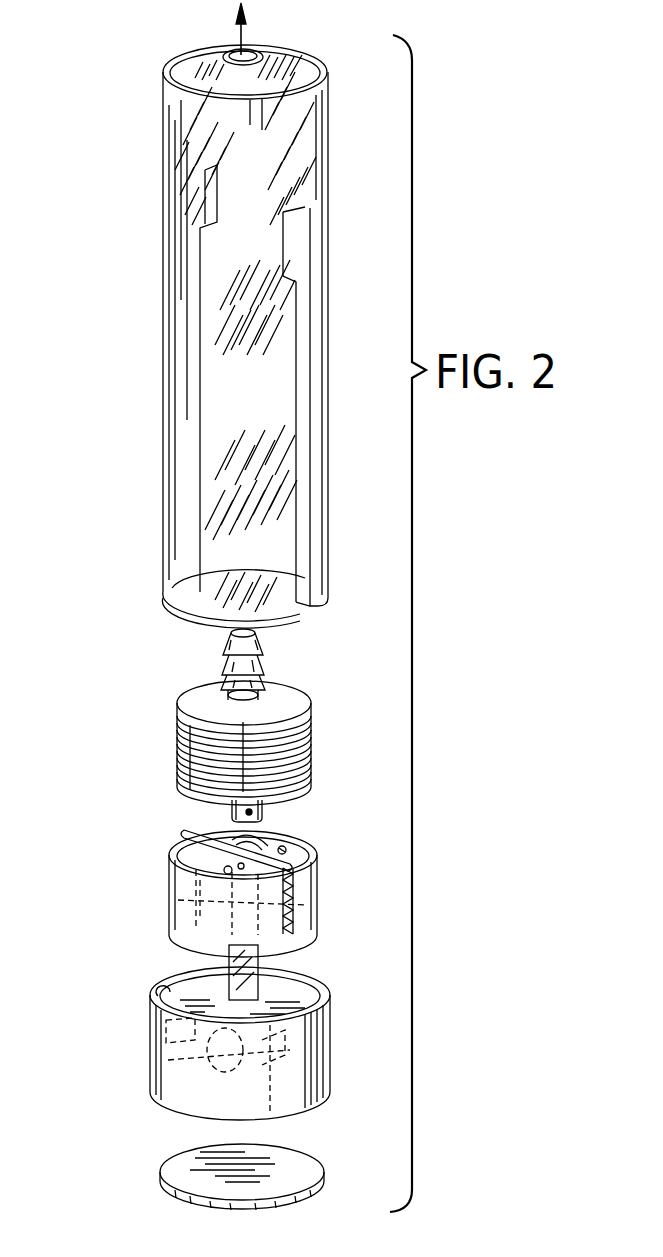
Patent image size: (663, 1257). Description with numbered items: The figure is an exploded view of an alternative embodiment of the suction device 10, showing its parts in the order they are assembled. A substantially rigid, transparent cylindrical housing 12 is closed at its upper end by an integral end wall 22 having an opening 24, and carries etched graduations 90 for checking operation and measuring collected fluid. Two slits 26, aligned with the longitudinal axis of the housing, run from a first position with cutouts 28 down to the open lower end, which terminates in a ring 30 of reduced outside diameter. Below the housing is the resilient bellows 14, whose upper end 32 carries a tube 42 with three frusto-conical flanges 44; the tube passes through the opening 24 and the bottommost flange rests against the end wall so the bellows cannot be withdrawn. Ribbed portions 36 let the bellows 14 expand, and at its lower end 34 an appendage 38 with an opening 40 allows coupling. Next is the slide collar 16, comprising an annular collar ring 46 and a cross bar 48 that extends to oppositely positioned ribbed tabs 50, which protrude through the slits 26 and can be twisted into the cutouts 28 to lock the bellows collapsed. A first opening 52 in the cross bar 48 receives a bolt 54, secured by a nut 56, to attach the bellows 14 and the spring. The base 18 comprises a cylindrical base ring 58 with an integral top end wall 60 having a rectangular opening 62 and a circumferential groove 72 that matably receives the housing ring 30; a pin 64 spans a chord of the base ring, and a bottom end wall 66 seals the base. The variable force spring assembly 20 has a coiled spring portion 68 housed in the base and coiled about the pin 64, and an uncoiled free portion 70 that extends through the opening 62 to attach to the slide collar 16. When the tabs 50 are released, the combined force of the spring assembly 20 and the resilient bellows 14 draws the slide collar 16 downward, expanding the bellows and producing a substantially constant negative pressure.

The suction device 10 is at (122, 35).
The cylindrical housing 12 is at (78, 612).
The resilient bellows 14 is at (78, 678).
The slide collar 16 is at (78, 822).
The base 18 is at (78, 985).
The variable force spring assembly 20 is at (265, 958).
The end wall 22 is at (196, 73).
The opening 24 is at (228, 50).
The slits 26 is at (197, 371).
The cutouts 28 is at (206, 186).
The ring 30 is at (197, 612).
The upper end 32 is at (198, 701).
The lower end 34 is at (300, 792).
The ribbed portions 36 is at (210, 775).
The appendage 38 is at (232, 808).
The opening 40 is at (265, 812).
The tube 42 is at (261, 648).
The flanges 44 is at (263, 664).
The collar ring 46 is at (195, 920).
The cross bar 48 is at (178, 852).
The tabs 50 is at (293, 896).
The first opening 52 is at (207, 826).
The bolt 54 is at (305, 848).
The nut 56 is at (180, 878).
The base ring 58 is at (300, 1055).
The top end wall 60 is at (310, 990).
The rectangular opening 62 is at (275, 972).
The pin 64 is at (275, 1122).
The bottom end wall 66 is at (182, 1168).
The coiled spring portion 68 is at (168, 1065).
The uncoiled free portion 70 is at (270, 838).
The groove 72 is at (168, 990).
The etched graduations 90 is at (220, 266).